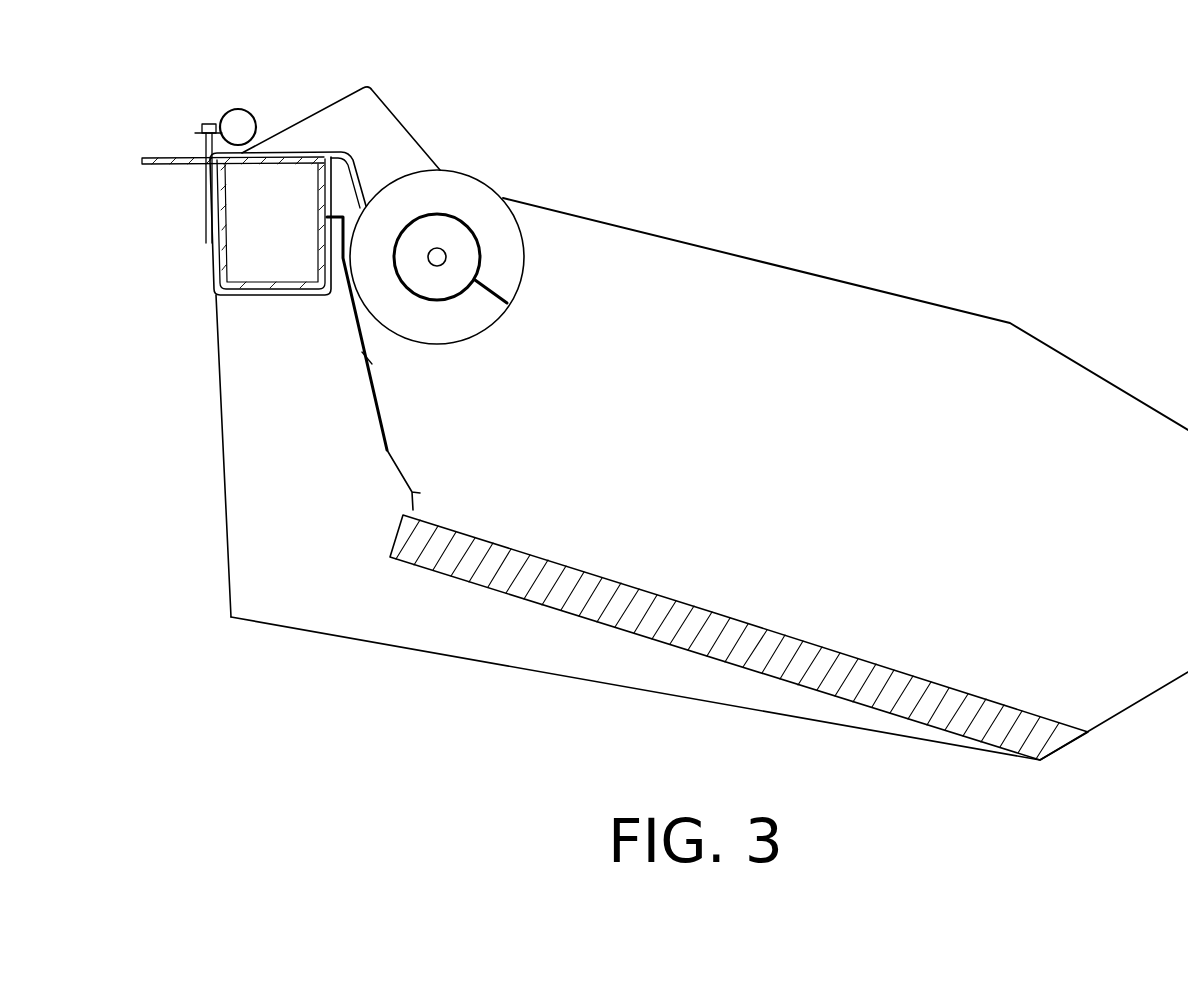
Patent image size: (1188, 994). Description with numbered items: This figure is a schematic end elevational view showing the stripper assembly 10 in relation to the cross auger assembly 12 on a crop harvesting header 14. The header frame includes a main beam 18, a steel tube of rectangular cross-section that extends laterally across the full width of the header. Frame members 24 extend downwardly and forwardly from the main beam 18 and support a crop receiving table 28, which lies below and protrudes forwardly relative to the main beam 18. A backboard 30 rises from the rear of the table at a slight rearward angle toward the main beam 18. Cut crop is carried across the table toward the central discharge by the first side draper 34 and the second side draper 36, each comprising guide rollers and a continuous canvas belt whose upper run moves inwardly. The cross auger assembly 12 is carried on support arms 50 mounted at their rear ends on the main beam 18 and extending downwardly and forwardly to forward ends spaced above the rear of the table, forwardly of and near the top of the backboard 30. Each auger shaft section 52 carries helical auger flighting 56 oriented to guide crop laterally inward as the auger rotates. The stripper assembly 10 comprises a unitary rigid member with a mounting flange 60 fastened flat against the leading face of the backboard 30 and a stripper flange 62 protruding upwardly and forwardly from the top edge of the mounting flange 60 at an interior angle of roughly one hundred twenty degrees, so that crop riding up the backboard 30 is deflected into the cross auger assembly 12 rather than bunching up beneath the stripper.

The stripper assembly 10 is at (368, 359).
The cross auger assembly 12 is at (499, 323).
The crop harvesting header 14 is at (883, 240).
The main beam 18 is at (220, 227).
The frame members 24 is at (337, 600).
The crop receiving table 28 is at (697, 682).
The backboard 30 is at (386, 450).
The first side draper 34 is at (739, 637).
The second side draper 36 is at (785, 645).
The support arm 50 is at (373, 117).
The auger shaft section 52 is at (440, 254).
The helical auger flighting 56 is at (507, 245).
The mounting flange 60 is at (368, 382).
The stripper flange 62 is at (371, 356).